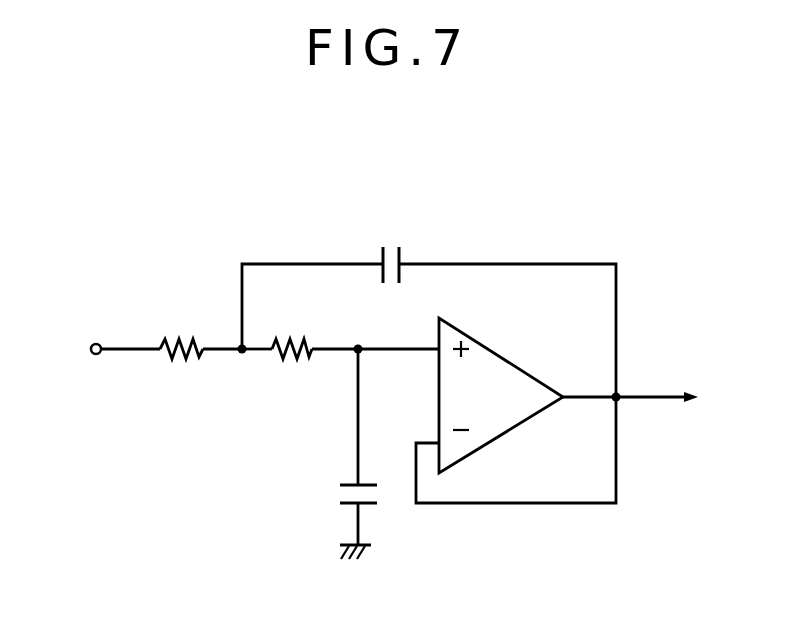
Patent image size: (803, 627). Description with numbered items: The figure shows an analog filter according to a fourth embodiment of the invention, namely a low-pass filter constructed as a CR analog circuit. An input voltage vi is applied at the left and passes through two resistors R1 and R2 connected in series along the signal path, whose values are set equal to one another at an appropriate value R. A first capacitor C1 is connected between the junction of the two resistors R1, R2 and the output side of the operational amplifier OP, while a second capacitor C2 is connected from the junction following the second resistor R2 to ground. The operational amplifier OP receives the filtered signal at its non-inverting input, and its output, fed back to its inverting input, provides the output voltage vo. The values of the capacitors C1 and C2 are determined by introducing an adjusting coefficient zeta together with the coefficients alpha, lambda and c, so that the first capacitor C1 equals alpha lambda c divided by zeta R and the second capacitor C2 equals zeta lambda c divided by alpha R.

The input voltage terminal vi is at (100, 352).
The resistor R1 is at (201, 374).
The resistor R2 is at (315, 374).
The capacitor C1 is at (429, 302).
The capacitor C2 is at (333, 454).
The operational amplifier OP is at (500, 359).
The output voltage terminal vo is at (651, 402).